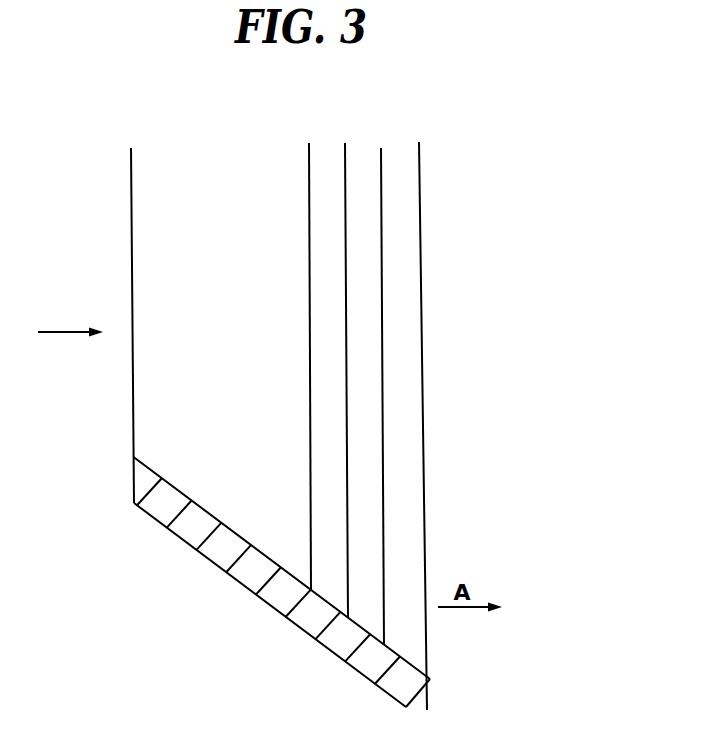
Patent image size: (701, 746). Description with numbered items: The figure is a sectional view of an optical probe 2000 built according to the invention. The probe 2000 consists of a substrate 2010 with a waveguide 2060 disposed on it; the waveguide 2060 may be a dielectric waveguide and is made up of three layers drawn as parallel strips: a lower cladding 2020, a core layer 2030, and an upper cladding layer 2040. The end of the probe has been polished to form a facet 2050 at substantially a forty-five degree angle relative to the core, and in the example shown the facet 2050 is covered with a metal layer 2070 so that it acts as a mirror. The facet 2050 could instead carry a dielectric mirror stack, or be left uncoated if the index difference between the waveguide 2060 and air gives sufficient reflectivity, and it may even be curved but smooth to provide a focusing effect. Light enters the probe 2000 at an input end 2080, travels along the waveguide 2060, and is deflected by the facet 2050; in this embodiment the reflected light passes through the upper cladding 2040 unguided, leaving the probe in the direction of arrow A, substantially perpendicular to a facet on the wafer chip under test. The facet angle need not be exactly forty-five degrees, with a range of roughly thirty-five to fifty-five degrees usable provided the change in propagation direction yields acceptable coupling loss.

The optical probe 2000 is at (70, 315).
The substrate 2010 is at (200, 323).
The lower cladding 2020 is at (328, 380).
The core layer 2030 is at (366, 396).
The upper cladding layer 2040 is at (406, 426).
The facet 2050 is at (206, 494).
The waveguide 2060 is at (309, 127).
The metal layer 2070 is at (252, 570).
The input end 2080 is at (218, 174).